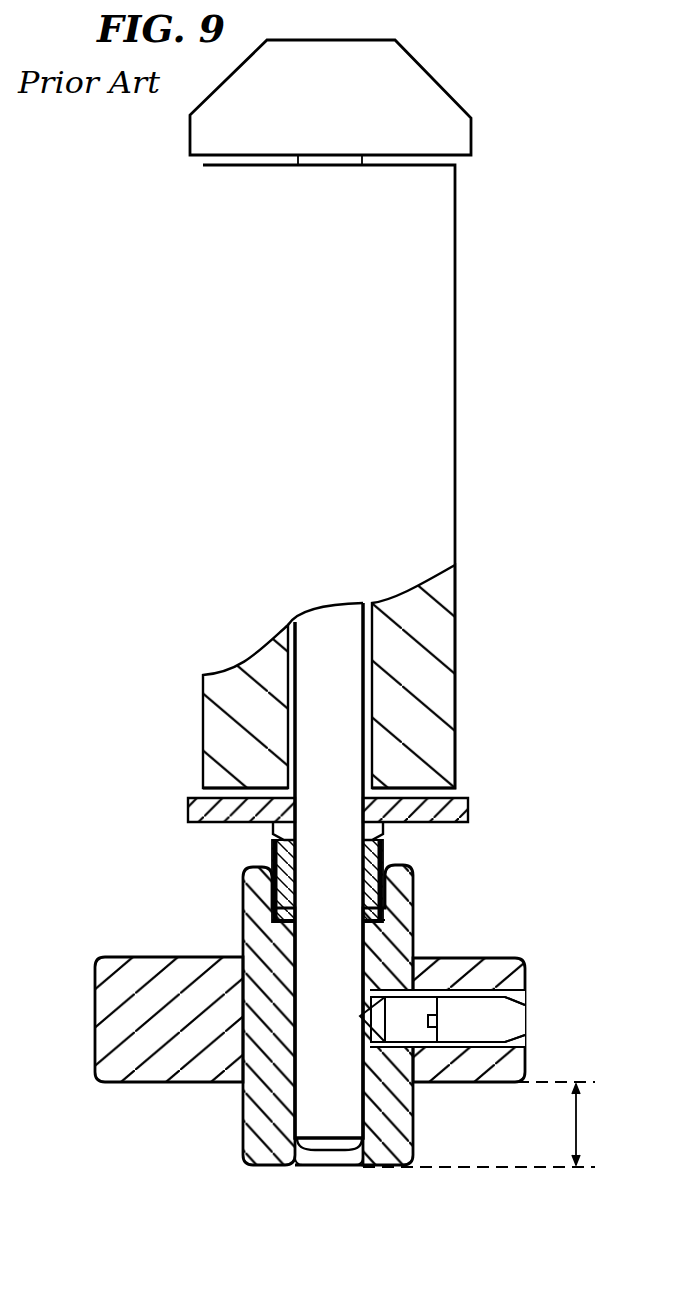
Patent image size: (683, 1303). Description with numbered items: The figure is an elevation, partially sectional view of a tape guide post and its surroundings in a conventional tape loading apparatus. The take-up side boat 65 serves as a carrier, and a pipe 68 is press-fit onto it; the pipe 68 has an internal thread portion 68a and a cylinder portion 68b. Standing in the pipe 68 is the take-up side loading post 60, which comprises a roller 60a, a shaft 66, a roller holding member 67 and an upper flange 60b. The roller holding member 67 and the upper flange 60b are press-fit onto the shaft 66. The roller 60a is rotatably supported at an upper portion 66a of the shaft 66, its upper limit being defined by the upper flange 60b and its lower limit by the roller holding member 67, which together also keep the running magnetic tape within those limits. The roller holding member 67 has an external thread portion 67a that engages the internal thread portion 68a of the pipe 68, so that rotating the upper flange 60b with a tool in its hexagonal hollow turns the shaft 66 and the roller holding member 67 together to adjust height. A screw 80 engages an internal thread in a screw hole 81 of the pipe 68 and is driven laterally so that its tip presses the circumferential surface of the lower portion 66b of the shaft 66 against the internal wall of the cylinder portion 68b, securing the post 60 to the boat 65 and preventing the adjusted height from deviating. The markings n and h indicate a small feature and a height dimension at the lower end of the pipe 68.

The take-up side loading post 60 is at (456, 340).
The roller 60a is at (430, 699).
The upper flange 60b is at (415, 97).
The take-up side boat 65 is at (527, 976).
The shaft 66 is at (367, 655).
The upper portion of the shaft 66a is at (336, 697).
The lower portion of the shaft 66b is at (310, 1103).
The roller holding member 67 is at (470, 807).
The external thread portion 67a is at (277, 849).
The pipe 68 is at (409, 895).
The internal thread portion 68a is at (275, 915).
The cylinder portion 68b is at (354, 1167).
The screw 80 is at (438, 1007).
The screw hole 81 is at (527, 1008).
The notch n is at (311, 1168).
The height h is at (483, 1124).